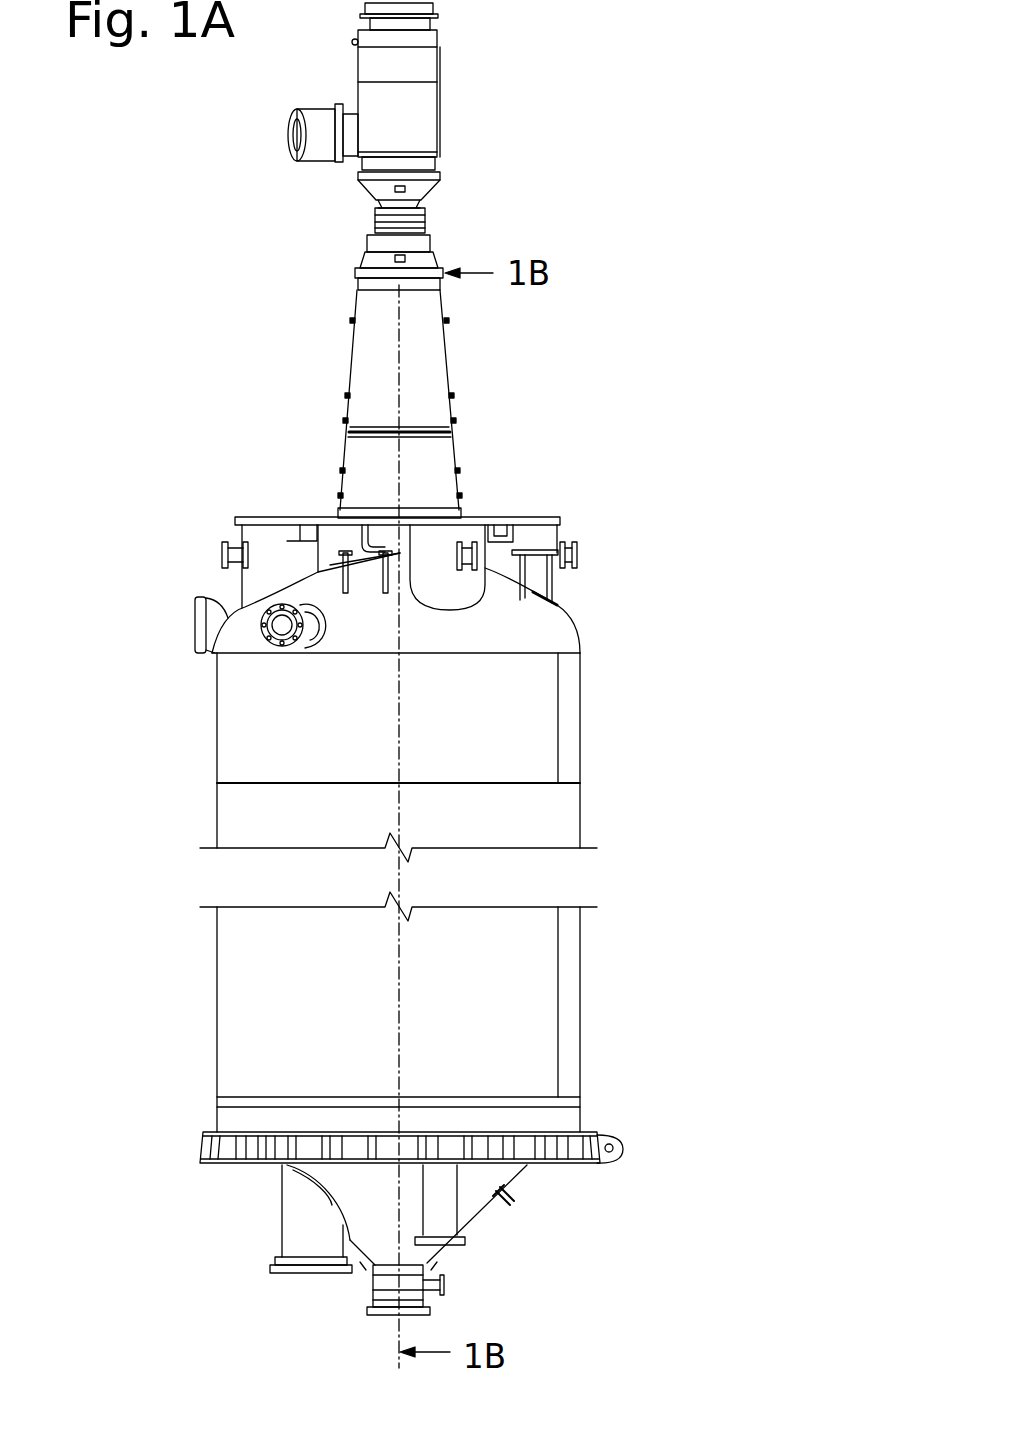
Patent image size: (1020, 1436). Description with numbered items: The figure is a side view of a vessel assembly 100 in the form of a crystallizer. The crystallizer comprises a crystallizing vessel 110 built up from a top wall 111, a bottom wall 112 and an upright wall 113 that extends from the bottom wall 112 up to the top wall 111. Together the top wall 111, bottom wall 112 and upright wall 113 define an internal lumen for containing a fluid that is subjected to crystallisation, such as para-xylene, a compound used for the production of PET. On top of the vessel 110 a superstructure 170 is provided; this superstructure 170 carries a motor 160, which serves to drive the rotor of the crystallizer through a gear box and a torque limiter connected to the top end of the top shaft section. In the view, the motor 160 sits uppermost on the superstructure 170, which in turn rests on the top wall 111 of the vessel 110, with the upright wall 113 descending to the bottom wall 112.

The vessel assembly 100 is at (632, 355).
The motor 160 is at (408, 110).
The superstructure 170 is at (518, 409).
The top wall 111 is at (510, 613).
The crystallizing vessel 110 is at (525, 728).
The upright wall 113 is at (583, 958).
The bottom wall 112 is at (483, 1210).